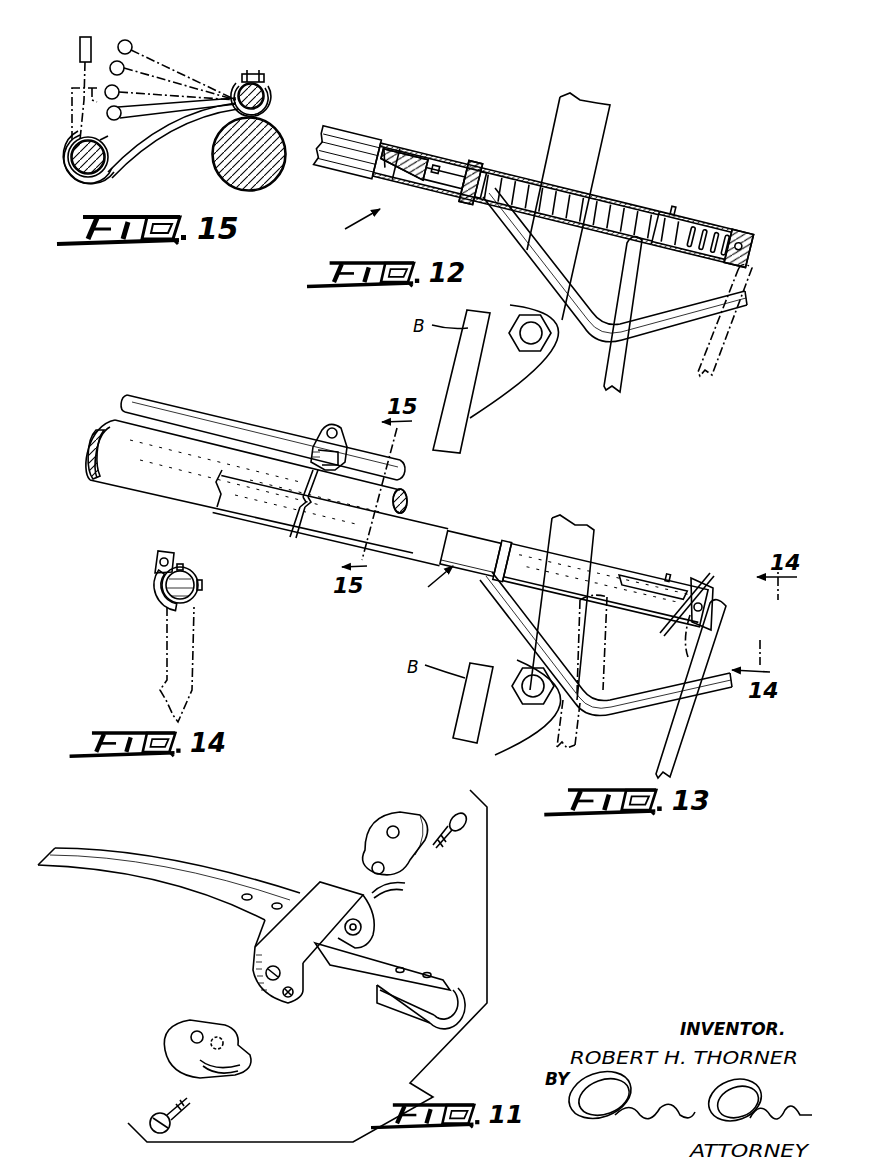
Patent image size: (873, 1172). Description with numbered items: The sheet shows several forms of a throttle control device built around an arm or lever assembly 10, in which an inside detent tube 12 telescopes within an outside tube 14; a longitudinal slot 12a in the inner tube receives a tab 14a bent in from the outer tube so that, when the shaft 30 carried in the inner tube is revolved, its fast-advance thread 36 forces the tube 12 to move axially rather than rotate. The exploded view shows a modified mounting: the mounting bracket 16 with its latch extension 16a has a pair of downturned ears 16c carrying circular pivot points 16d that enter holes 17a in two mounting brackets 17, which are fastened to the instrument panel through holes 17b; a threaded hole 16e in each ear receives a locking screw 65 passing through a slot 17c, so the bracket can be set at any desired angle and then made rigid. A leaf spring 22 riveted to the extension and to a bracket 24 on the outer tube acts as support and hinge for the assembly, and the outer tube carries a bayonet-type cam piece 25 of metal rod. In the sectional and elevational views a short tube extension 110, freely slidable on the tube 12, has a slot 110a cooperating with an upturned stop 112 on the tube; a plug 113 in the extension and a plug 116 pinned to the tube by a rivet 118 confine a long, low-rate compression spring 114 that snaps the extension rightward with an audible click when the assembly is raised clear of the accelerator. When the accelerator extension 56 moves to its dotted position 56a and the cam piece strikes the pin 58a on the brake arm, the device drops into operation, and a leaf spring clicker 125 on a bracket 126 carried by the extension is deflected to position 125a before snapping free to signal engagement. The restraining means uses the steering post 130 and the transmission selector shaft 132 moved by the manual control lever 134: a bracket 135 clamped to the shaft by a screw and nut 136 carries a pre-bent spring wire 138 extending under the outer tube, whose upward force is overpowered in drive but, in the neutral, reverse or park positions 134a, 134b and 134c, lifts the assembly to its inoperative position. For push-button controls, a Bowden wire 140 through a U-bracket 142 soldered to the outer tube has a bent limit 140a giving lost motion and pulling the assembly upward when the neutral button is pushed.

In FIG. 12, the arm or lever assembly 10 is at (351, 225).
In FIG. 13, the arm or lever assembly 10 is at (429, 586).
In FIG. 15, the inside detent tube 12 is at (107, 178).
In FIG. 12, the inside detent tube 12 is at (495, 172).
In FIG. 13, the inside detent tube 12 is at (452, 534).
In FIG. 15, the longitudinal slot 12a is at (110, 170).
In FIG. 12, the longitudinal slot 12a is at (440, 180).
In FIG. 15, the outside tube 14 is at (70, 148).
In FIG. 12, the outside tube 14 is at (437, 148).
In FIG. 13, the outside tube 14 is at (418, 524).
In FIG. 12, the tab 14a is at (441, 165).
In FIG. 11, the mounting bracket 16 is at (325, 950).
In FIG. 11, the latch extension 16a is at (105, 863).
In FIG. 11, the downturned ears 16c is at (373, 913).
In FIG. 11, the circular pivot points 16d is at (266, 970).
In FIG. 11, the threaded hole 16e is at (361, 929).
In FIG. 11, the mounting brackets 17 is at (403, 820).
In FIG. 11, the holes 17a is at (372, 868).
In FIG. 11, the holes 17b is at (388, 832).
In FIG. 11, the slots 17c is at (405, 884).
In FIG. 11, the leaf spring member 22 is at (385, 957).
In FIG. 11, the bracket 24 is at (417, 1003).
In FIG. 12, the bayonet-type cam piece 25 is at (520, 246).
In FIG. 13, the bayonet-type cam piece 25 is at (500, 588).
In FIG. 15, the rod or shaft 30 is at (70, 172).
In FIG. 12, the rod or shaft 30 is at (408, 150).
In FIG. 12, the thread 36 is at (392, 148).
In FIG. 12, the accelerator extension 56 is at (638, 286).
In FIG. 13, the accelerator extension 56 is at (690, 722).
In FIG. 14, the accelerator extension 56 is at (167, 656).
In FIG. 12, the dotted position of accelerator extension 56a is at (700, 362).
In FIG. 12, the pin 58a is at (540, 340).
In FIG. 13, the pin 58a is at (520, 668).
In FIG. 11, the locking screw 65 is at (453, 812).
In FIG. 12, the tube extension 110 is at (712, 256).
In FIG. 13, the tube extension 110 is at (515, 546).
In FIG. 14, the tube extension 110 is at (198, 578).
In FIG. 12, the slot 110a is at (715, 230).
In FIG. 12, the stop 112 is at (673, 205).
In FIG. 13, the stop 112 is at (673, 581).
In FIG. 14, the stop 112 is at (181, 565).
In FIG. 12, the plug 113 is at (752, 245).
In FIG. 14, the plug 113 is at (202, 588).
In FIG. 12, the compression spring 114 is at (697, 226).
In FIG. 12, the plug 116 is at (478, 201).
In FIG. 12, the rivet or pin 118 is at (462, 190).
In FIG. 13, the rivet or pin 118 is at (488, 540).
In FIG. 13, the leaf spring clicker 125 is at (670, 625).
In FIG. 14, the leaf spring clicker 125 is at (147, 595).
In FIG. 13, the deflected position of leaf spring 125a is at (682, 654).
In FIG. 13, the bracket 126 is at (640, 582).
In FIG. 15, the steering post 130 is at (230, 178).
In FIG. 13, the steering post 130 is at (132, 487).
In FIG. 15, the transmission selector rod or shaft 132 is at (268, 100).
In FIG. 13, the transmission selector rod or shaft 132 is at (177, 413).
In FIG. 15, the manual control lever 134 is at (115, 120).
In FIG. 15, the neutral position of control lever 134a is at (175, 66).
In FIG. 15, the reverse position of control lever 134b is at (150, 53).
In FIG. 15, the park position of control lever 134c is at (148, 37).
In FIG. 15, the bracket 135 is at (270, 92).
In FIG. 13, the bracket 135 is at (318, 440).
In FIG. 15, the screw and nut 136 is at (258, 74).
In FIG. 13, the screw and nut 136 is at (334, 428).
In FIG. 15, the spring wire 138 is at (133, 153).
In FIG. 13, the spring wire 138 is at (295, 532).
In FIG. 15, the Bowden wire 140 is at (80, 70).
In FIG. 15, the limit 140a is at (76, 118).
In FIG. 15, the U-bracket 142 is at (72, 95).